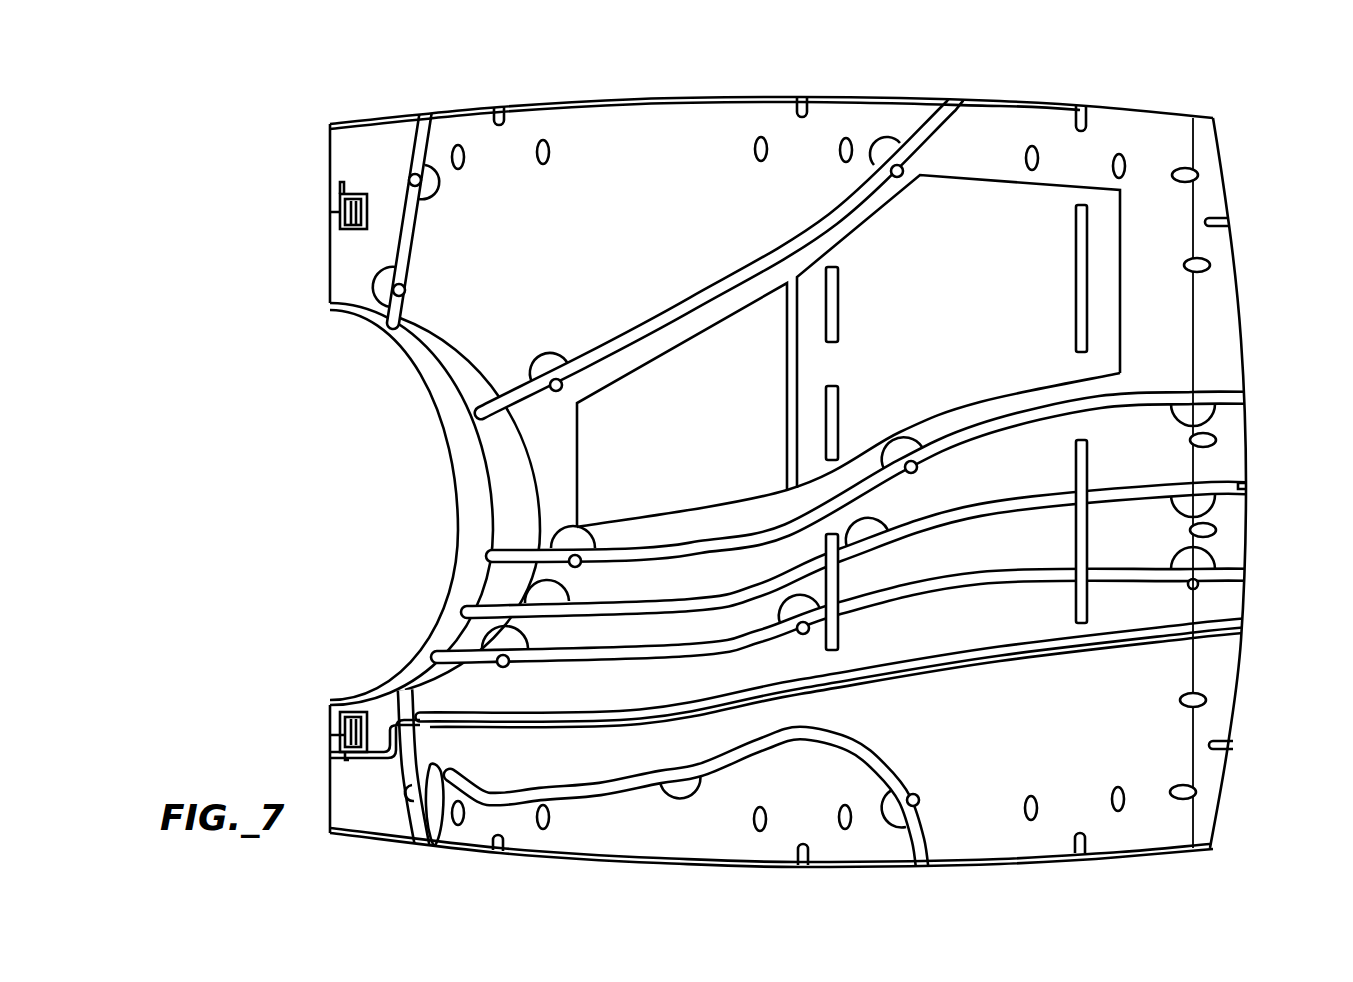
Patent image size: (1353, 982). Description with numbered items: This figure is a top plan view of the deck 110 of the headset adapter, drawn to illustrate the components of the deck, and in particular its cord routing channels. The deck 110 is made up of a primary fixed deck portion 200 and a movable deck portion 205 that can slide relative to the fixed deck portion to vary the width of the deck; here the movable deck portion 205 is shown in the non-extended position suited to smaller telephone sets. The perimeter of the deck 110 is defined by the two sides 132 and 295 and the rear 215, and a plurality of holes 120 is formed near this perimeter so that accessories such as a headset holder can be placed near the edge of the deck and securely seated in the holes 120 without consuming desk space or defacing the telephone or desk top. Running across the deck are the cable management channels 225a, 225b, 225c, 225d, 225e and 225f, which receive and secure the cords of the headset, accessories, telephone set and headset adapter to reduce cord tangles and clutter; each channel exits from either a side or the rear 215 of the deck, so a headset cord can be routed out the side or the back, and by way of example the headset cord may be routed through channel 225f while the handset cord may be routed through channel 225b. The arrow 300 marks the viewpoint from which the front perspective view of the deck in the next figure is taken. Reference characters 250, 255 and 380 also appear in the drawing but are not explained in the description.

The deck 110 is at (784, 465).
The holes 120 is at (768, 150).
The side 132 is at (728, 862).
The primary fixed deck portion 200 is at (655, 118).
The movable deck portion 205 is at (1232, 702).
The rear 215 is at (1245, 308).
The cable management channel 225a is at (642, 347).
The cable management channel 225b is at (650, 550).
The cable management channel 225c is at (943, 525).
The cable management channel 225d is at (935, 585).
The cable management channel 225e is at (922, 668).
The cable management channel 225f is at (898, 773).
The upper attachment tab 250 is at (337, 208).
The lower attachment tab 255 is at (337, 730).
The side 295 is at (1120, 118).
The arrow 300 is at (350, 507).
The direction arrow 380 is at (606, 30).